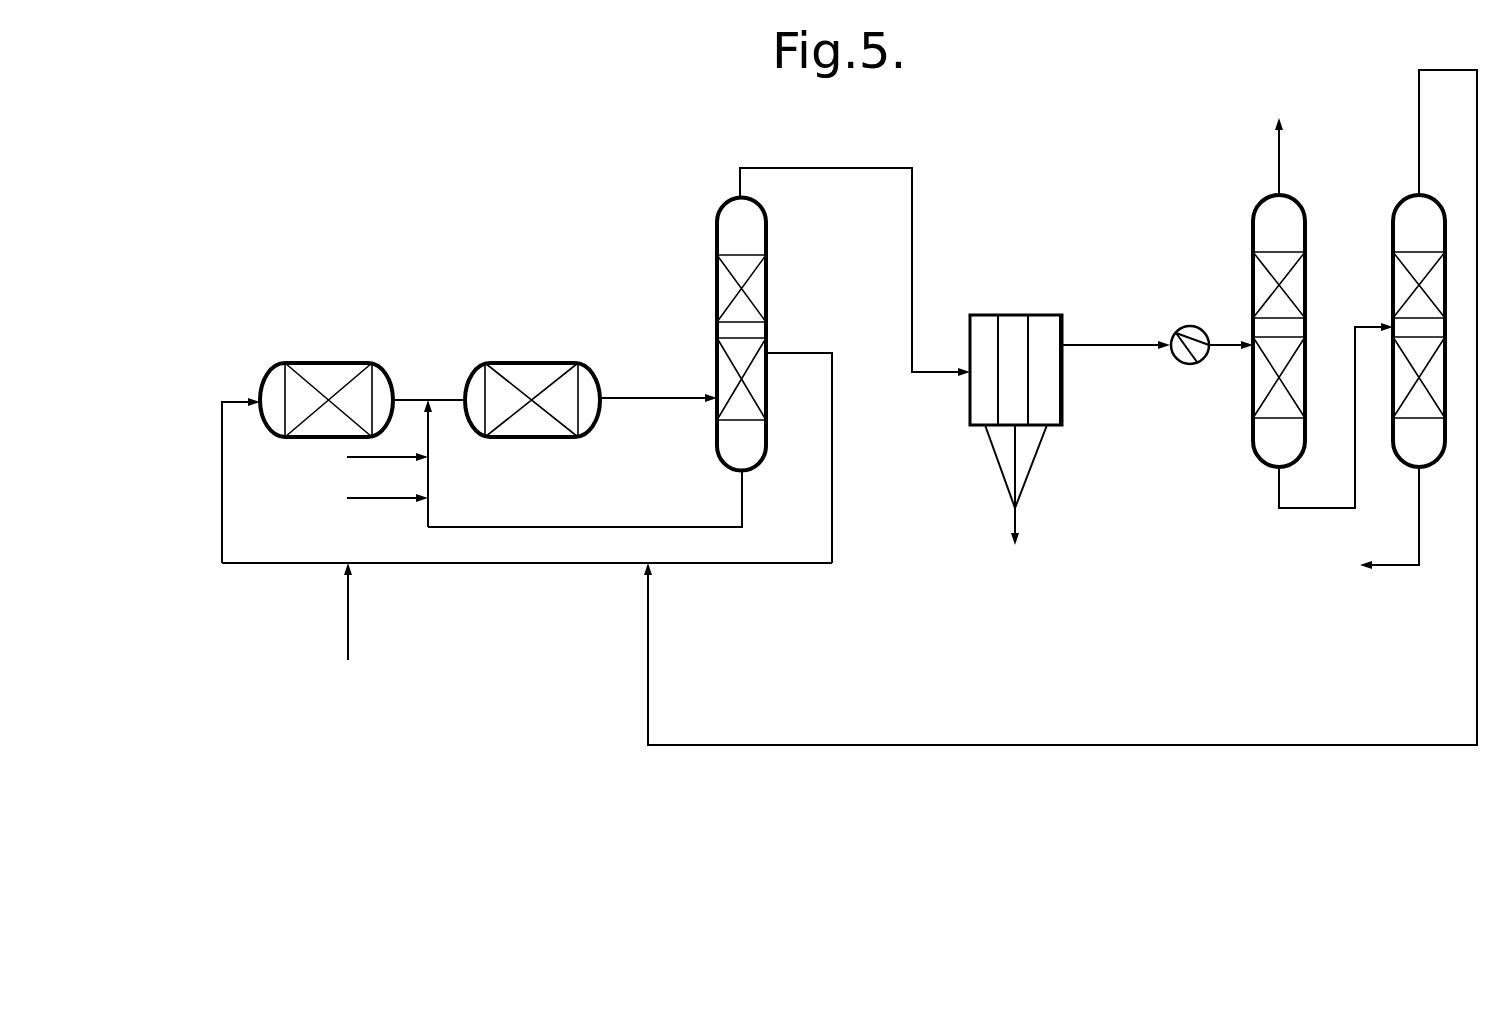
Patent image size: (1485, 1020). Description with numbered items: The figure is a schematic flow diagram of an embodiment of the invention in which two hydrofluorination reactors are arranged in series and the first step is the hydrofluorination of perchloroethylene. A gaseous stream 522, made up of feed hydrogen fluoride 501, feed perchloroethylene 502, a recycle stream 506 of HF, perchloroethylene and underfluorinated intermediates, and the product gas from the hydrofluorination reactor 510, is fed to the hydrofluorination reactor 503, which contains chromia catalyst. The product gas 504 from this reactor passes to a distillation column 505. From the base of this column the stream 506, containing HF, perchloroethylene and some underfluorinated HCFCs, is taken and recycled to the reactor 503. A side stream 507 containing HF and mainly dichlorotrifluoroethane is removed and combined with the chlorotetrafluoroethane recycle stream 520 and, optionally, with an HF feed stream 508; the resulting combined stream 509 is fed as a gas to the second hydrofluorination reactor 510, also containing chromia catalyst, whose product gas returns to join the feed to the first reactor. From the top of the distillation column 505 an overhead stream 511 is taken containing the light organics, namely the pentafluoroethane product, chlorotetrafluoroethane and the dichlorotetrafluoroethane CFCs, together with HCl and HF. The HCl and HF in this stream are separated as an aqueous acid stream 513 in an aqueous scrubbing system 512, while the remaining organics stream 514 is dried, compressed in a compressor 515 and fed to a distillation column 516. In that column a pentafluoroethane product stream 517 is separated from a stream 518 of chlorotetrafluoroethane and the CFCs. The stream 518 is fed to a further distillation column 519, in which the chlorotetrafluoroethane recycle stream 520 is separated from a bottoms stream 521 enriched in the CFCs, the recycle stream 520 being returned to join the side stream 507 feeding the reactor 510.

The feed hydrogen fluoride 501 is at (364, 459).
The feed perchloroethylene 502 is at (364, 500).
The hydrofluorination reactor 503 is at (548, 363).
The product gas 504 is at (640, 398).
The distillation column 505 is at (716, 224).
The recycle stream 506 is at (742, 500).
The side stream 507 is at (802, 353).
The HF feed stream 508 is at (349, 622).
The combined stream 509 is at (222, 455).
The hydrofluorination reactor 510 is at (333, 363).
The overhead stream 511 is at (797, 168).
The aqueous scrubbing system 512 is at (1047, 395).
The aqueous acid stream 513 is at (1035, 468).
The organics stream 514 is at (1102, 345).
The compressor 515 is at (1192, 364).
The distillation column 516 is at (1255, 262).
The HFA 125 stream 517 is at (1274, 172).
The HCFC 124/CFCs 114/114a stream 518 is at (1279, 498).
The distillation column 519 is at (1392, 219).
The HCFC 124 recycle stream 520 is at (1417, 127).
The bottoms stream 521 is at (1419, 545).
The gaseous stream 522 is at (444, 398).